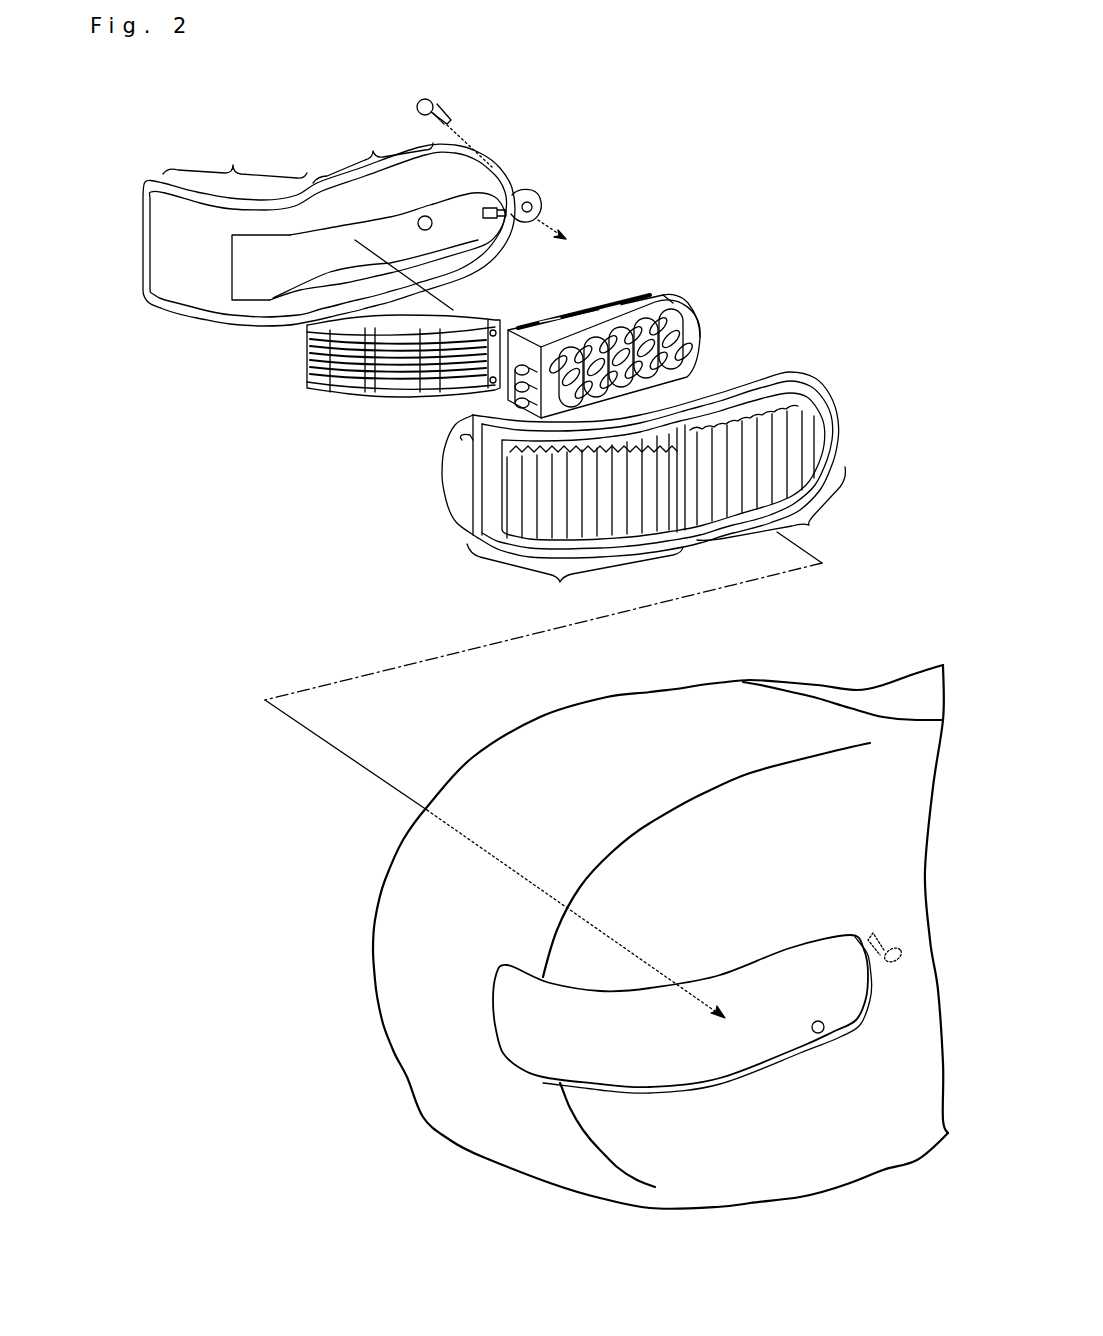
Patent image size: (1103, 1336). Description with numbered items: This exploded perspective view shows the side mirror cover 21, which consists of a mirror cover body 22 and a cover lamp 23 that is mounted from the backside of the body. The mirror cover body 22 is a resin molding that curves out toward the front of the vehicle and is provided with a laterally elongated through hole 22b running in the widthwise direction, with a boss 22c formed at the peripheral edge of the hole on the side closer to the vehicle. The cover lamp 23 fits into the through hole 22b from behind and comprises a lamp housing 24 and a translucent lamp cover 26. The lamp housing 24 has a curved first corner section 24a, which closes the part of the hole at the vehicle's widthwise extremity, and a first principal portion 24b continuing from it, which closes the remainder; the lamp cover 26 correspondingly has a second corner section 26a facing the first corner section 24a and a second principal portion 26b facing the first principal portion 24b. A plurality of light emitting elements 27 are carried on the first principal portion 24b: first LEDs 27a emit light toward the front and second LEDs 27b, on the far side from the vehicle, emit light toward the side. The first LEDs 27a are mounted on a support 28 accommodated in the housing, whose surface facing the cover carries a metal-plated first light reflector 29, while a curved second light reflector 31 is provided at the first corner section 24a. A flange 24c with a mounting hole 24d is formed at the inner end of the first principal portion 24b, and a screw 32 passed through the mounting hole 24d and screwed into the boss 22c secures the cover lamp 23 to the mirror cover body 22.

The side mirror cover 21 is at (303, 649).
The mirror cover body 22 is at (660, 950).
The through hole 22b is at (820, 1033).
The boss 22c is at (890, 937).
The cover lamp 23 is at (806, 139).
The lamp housing 24 is at (496, 169).
The first corner section 24a is at (235, 157).
The first principal portion 24b is at (373, 154).
The flange 24c is at (543, 198).
The mounting hole 24d is at (538, 220).
The lamp cover 26 is at (681, 488).
The second corner section 26a is at (575, 519).
The second principal portion 26b is at (775, 476).
The light emitting elements 27 is at (573, 339).
The first LEDs 27a is at (687, 360).
The second LEDs 27b is at (503, 390).
The support 28 is at (607, 300).
The first light reflector 29 is at (685, 300).
The second light reflector 31 is at (343, 400).
The screw 32 is at (436, 104).